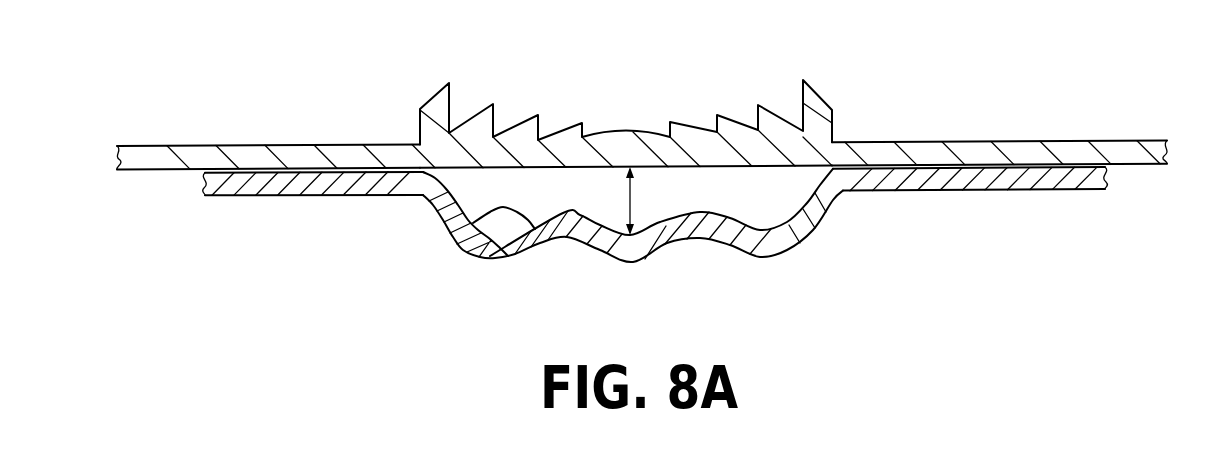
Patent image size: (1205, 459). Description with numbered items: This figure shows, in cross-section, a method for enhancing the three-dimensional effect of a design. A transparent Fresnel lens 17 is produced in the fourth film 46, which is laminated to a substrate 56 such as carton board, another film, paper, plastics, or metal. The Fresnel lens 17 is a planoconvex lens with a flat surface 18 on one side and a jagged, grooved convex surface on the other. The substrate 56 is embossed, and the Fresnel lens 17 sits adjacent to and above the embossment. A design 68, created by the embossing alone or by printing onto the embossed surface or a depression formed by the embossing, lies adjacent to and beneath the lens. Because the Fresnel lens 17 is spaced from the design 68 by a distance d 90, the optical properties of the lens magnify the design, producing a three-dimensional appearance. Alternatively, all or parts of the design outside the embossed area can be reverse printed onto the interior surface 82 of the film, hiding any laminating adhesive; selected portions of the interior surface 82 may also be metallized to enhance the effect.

The Fresnel lens 17 is at (661, 83).
The flat surface 18 is at (700, 167).
The fourth film 46 is at (1067, 152).
The substrate 56 is at (1032, 182).
The design 68 is at (461, 244).
The interior surface 82 is at (175, 170).
The distance d 90 is at (628, 202).